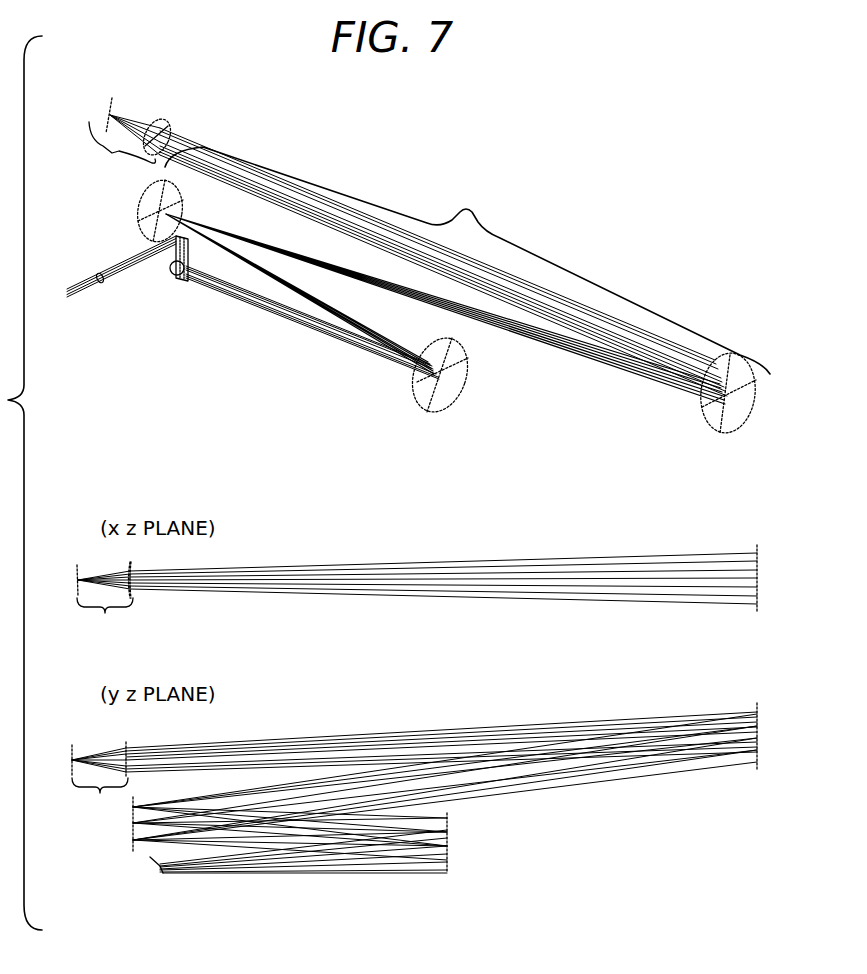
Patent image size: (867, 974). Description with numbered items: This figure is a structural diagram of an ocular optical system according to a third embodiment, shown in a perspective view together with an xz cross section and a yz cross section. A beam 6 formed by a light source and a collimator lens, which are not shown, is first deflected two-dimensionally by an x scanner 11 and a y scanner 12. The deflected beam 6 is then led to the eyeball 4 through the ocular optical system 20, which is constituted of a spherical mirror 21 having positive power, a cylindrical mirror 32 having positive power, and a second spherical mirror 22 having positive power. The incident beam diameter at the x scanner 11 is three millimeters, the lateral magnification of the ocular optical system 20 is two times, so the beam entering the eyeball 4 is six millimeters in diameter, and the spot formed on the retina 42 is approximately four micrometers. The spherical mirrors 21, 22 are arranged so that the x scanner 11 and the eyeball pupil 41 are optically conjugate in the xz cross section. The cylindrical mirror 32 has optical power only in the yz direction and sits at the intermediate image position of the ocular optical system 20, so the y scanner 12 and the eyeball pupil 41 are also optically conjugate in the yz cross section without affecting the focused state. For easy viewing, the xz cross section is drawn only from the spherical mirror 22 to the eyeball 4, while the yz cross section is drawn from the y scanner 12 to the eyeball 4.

The eyeball 4 is at (114, 469).
The retina 42 is at (115, 113).
The eyeball pupil 41 is at (160, 122).
The ocular optical system 20 is at (465, 262).
The cylindrical mirror 32 is at (140, 227).
The beam 6 is at (152, 258).
The x scanner 11 is at (190, 248).
The y scanner 12 is at (176, 276).
The spherical mirror 21 is at (468, 377).
The spherical mirror 22 is at (702, 423).